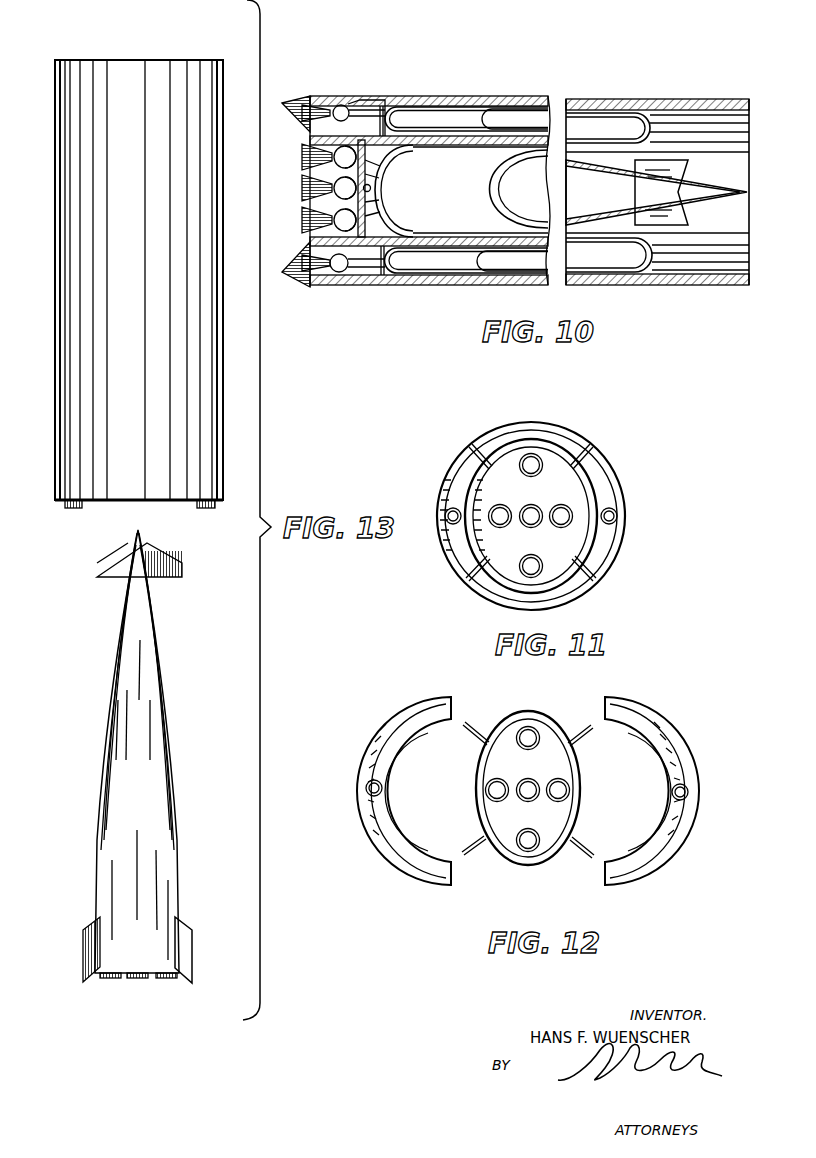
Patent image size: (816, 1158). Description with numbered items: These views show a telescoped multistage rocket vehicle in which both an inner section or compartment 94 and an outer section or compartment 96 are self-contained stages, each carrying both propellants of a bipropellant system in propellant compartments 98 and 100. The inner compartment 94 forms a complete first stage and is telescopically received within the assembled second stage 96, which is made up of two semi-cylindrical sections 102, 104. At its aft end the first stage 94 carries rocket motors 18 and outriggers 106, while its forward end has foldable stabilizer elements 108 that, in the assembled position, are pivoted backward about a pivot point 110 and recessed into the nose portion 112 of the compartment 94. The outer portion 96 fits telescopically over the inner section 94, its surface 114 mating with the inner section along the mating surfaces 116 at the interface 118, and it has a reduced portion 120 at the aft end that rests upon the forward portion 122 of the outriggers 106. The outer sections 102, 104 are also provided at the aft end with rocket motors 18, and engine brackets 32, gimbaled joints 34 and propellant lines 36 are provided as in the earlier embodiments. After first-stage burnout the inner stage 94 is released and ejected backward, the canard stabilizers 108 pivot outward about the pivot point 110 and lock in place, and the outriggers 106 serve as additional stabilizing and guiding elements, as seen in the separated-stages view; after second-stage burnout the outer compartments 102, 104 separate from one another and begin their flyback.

In FIG. 13, the rocket motors 18 is at (72, 508).
In FIG. 10, the rocket motors 18 is at (307, 101).
In FIG. 11, the rocket motors 18 is at (531, 508).
In FIG. 12, the rocket motors 18 is at (560, 786).
In FIG. 10, the engine brackets 32 is at (391, 217).
In FIG. 10, the gimbaled joints 34 is at (371, 189).
In FIG. 10, the propellant lines 36 is at (362, 100).
In FIG. 13, the inner section or compartment 94 is at (148, 798).
In FIG. 10, the inner section or compartment 94 is at (472, 168).
In FIG. 11, the inner section or compartment 94 is at (510, 560).
In FIG. 12, the inner section or compartment 94 is at (553, 822).
In FIG. 13, the outer section or compartment 96 is at (179, 46).
In FIG. 10, the outer section or compartment 96 is at (636, 94).
In FIG. 11, the outer section or compartment 96 is at (566, 616).
In FIG. 10, the propellant compartment 98 is at (609, 133).
In FIG. 10, the propellant compartment 100 is at (459, 127).
In FIG. 13, the semi-cylindrical section 102 is at (136, 148).
In FIG. 10, the semi-cylindrical section 102 is at (512, 266).
In FIG. 11, the semi-cylindrical section 102 is at (573, 450).
In FIG. 12, the semi-cylindrical section 102 is at (641, 724).
In FIG. 13, the semi-cylindrical section 104 is at (180, 148).
In FIG. 10, the semi-cylindrical section 104 is at (510, 118).
In FIG. 11, the semi-cylindrical section 104 is at (516, 437).
In FIG. 12, the semi-cylindrical section 104 is at (404, 728).
In FIG. 13, the outriggers 106 is at (190, 957).
In FIG. 10, the outriggers 106 is at (290, 270).
In FIG. 11, the outriggers 106 is at (592, 470).
In FIG. 12, the outriggers 106 is at (476, 846).
In FIG. 13, the foldable stabilizer elements 108 is at (165, 572).
In FIG. 10, the foldable stabilizer elements 108 is at (672, 222).
In FIG. 10, the pivot point 110 is at (679, 178).
In FIG. 13, the nose portion 112 is at (135, 578).
In FIG. 10, the nose portion 112 is at (698, 209).
In FIG. 12, the surface 114 is at (400, 795).
In FIG. 12, the mating surfaces 116 is at (477, 758).
In FIG. 10, the interface 118 is at (609, 224).
In FIG. 10, the reduced portion 120 is at (381, 106).
In FIG. 10, the forward portion of the outriggers 122 is at (368, 285).